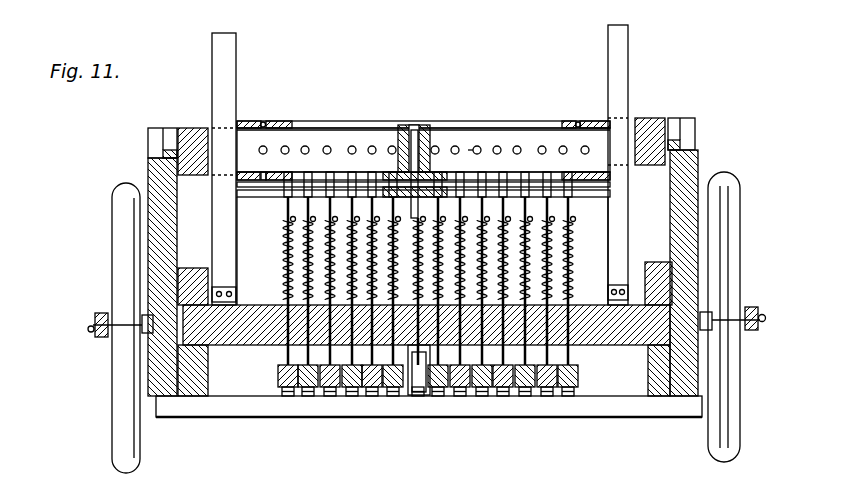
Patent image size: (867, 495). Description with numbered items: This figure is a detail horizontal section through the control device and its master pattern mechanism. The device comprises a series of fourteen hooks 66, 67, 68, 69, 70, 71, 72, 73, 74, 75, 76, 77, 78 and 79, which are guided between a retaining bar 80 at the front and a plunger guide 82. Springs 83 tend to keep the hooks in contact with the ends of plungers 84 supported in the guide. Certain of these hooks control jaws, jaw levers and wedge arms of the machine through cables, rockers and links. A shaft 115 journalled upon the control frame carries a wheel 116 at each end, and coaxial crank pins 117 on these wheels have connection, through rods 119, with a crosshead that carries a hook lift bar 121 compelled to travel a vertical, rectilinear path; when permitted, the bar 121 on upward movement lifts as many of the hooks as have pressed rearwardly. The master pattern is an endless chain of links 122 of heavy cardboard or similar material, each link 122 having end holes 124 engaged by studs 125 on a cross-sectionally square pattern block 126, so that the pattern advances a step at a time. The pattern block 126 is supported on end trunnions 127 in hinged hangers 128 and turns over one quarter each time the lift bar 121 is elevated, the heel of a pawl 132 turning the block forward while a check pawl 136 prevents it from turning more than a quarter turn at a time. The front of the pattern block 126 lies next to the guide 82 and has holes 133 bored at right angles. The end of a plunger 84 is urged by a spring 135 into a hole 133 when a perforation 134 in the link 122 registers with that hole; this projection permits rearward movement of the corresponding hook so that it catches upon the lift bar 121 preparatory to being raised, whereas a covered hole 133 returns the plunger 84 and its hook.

The hook 66 is at (568, 397).
The hook 67 is at (547, 397).
The hook 68 is at (525, 397).
The hook 69 is at (503, 397).
The hook 70 is at (482, 397).
The hook 71 is at (460, 397).
The hook 72 is at (438, 397).
The hook 73 is at (418, 397).
The hook 74 is at (394, 397).
The hook 75 is at (372, 397).
The hook 76 is at (352, 397).
The hook 77 is at (330, 397).
The hook 78 is at (309, 397).
The hook 79 is at (292, 397).
The retaining bar 80 is at (429, 416).
The plunger guide 82 is at (284, 206).
The springs 83 is at (282, 394).
The plungers 84 is at (310, 262).
The shaft 115 is at (148, 336).
The wheel 116 is at (122, 405).
The crank pins 117 is at (92, 338).
The rods 119 is at (94, 321).
The hook lift bar 121 is at (583, 304).
The links 122 is at (378, 127).
The end holes 124 is at (257, 121).
The studs 125 is at (268, 124).
The pattern block 126 is at (487, 129).
The end trunnions 127 is at (163, 127).
The hangers 128 is at (193, 127).
The pawl 132 is at (622, 62).
The holes 133 is at (352, 146).
The perforation 134 is at (419, 134).
The spring 135 is at (290, 248).
The check pawl 136 is at (230, 64).